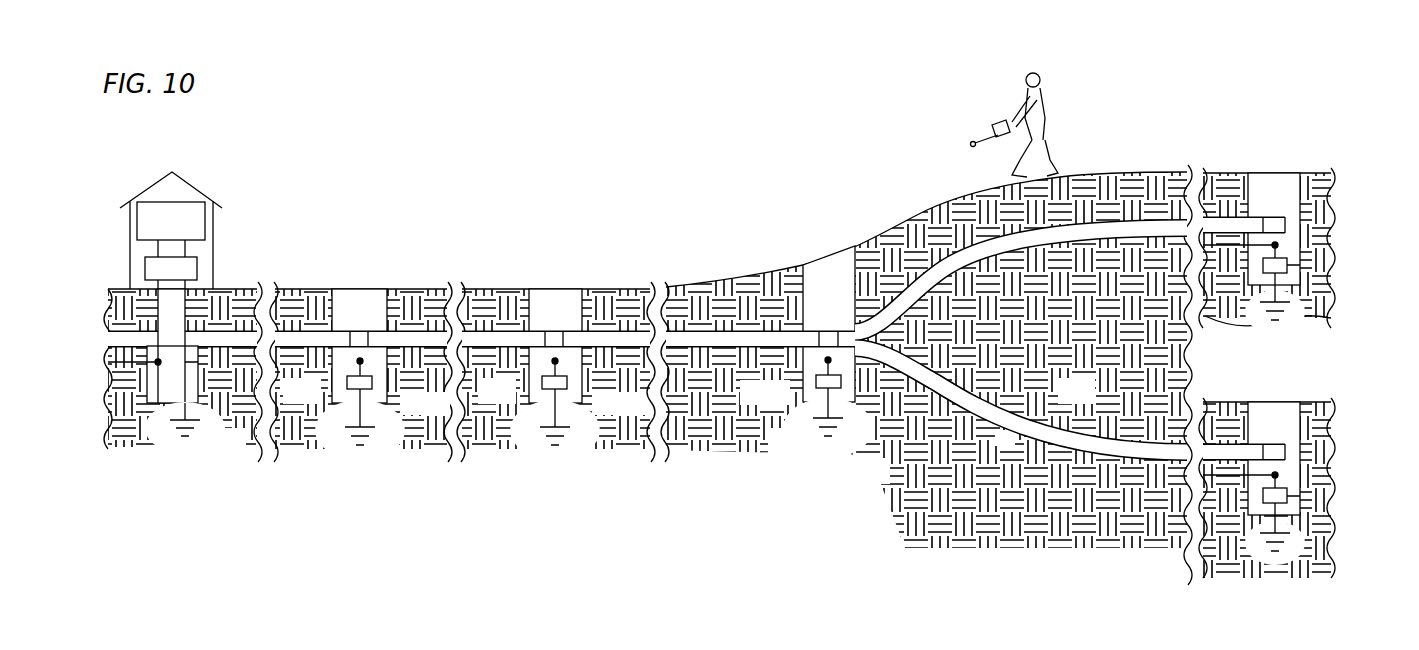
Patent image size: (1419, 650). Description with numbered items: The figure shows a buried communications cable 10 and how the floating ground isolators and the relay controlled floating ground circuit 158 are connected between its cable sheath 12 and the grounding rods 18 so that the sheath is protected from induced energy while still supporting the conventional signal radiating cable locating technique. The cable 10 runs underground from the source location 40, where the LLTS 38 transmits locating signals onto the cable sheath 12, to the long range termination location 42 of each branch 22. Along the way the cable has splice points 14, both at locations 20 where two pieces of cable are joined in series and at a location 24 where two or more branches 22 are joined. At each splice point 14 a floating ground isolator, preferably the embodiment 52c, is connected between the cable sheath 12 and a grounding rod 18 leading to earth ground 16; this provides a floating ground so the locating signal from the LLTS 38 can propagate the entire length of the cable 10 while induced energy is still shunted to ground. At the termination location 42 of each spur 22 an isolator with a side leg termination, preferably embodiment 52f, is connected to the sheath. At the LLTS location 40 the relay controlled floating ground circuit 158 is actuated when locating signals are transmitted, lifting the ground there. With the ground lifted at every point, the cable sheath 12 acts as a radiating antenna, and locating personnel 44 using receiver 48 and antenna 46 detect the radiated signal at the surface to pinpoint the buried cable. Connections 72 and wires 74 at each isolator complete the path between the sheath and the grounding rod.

The buried communications cable 10 is at (305, 337).
The cable sheath 12 is at (492, 360).
The cable splice point 14 is at (360, 336).
The earth ground 16 is at (290, 451).
The grounding rod 18 is at (192, 412).
The series joining location 20 is at (372, 291).
The branch 22 is at (1078, 215).
The branch joining location 24 is at (833, 263).
The LLTS 38 is at (205, 234).
The source location 40 is at (158, 198).
The termination location 42 is at (1280, 178).
The locating personnel 44 is at (1046, 84).
The antenna 46 is at (972, 142).
The receiver 48 is at (1002, 122).
The floating ground isolator 52c is at (373, 383).
The floating ground isolator with side leg termination 52f is at (1288, 265).
The connection conductor 72 is at (150, 312).
The ground wire 74 is at (175, 382).
The relay controlled floating ground circuit 158 is at (197, 270).